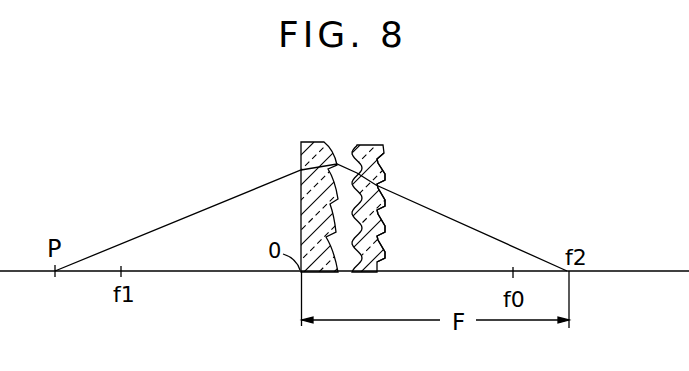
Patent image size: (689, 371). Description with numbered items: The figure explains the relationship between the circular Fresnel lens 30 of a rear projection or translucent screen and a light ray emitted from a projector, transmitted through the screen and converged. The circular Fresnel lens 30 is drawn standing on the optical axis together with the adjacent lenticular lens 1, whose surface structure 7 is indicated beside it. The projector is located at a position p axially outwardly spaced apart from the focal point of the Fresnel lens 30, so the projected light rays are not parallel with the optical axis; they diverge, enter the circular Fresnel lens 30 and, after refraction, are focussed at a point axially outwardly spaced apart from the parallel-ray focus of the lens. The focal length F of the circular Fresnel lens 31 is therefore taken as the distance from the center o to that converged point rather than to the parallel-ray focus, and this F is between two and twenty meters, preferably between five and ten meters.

The circular Fresnel lens 30 is at (311, 141).
The lenticular lens 1 is at (374, 141).
The sawtooth grating surface 7 is at (386, 171).
The circular Fresnel lens 31 is at (403, 270).